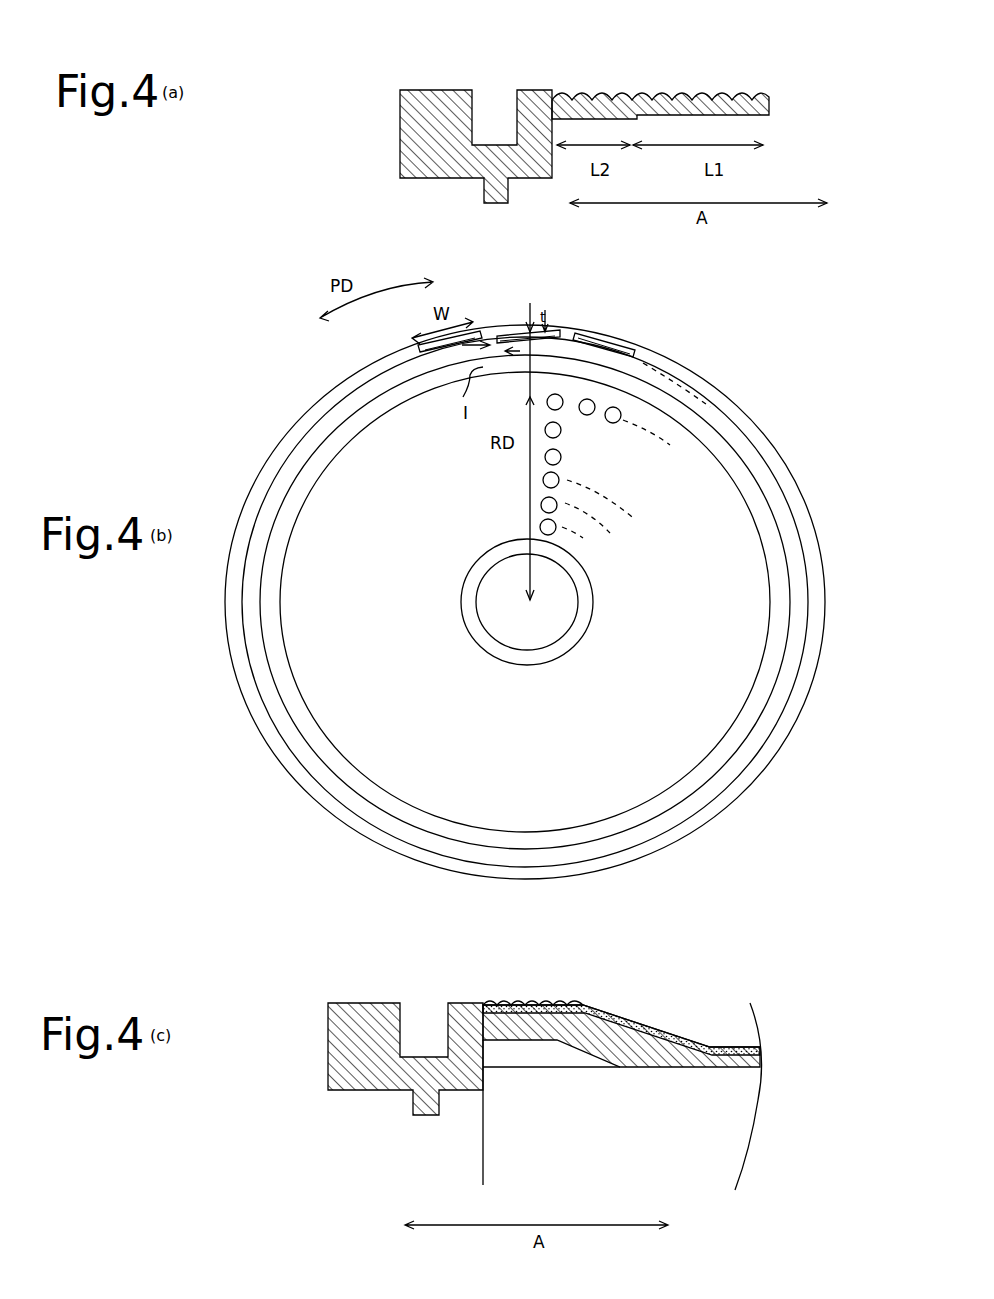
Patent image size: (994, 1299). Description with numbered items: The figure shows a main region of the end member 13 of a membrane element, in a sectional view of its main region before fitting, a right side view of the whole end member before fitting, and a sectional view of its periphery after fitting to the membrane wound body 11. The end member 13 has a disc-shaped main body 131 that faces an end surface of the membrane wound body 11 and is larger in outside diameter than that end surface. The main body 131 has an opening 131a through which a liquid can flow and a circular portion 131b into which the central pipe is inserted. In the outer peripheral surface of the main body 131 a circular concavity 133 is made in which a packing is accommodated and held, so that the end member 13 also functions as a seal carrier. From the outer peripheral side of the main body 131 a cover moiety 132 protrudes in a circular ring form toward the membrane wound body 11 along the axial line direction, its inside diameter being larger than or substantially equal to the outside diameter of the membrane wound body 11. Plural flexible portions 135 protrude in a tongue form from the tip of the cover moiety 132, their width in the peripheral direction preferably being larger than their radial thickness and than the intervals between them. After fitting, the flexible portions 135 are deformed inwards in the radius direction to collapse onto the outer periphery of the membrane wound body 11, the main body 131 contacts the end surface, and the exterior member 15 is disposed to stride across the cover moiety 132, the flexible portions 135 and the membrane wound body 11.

In FIG. 4A, the end member 13 is at (362, 100).
In FIG. 4C, the end member 13 is at (293, 1025).
In FIG. 4A, the main body 131 is at (400, 143).
In FIG. 4B, the main body 131 is at (272, 450).
In FIG. 4C, the main body 131 is at (328, 1060).
In FIG. 4B, the opening 131a is at (560, 457).
In FIG. 4B, the circular portion 131b is at (462, 623).
In FIG. 4A, the cover moiety 132 is at (598, 95).
In FIG. 4B, the cover moiety 132 is at (730, 410).
In FIG. 4C, the cover moiety 132 is at (527, 1003).
In FIG. 4A, the circular concavity 133 is at (495, 140).
In FIG. 4C, the circular concavity 133 is at (428, 1055).
In FIG. 4A, the flexible portions 135 is at (705, 97).
In FIG. 4B, the flexible portions 135 is at (558, 327).
In FIG. 4C, the flexible portions 135 is at (633, 1030).
In FIG. 4C, the exterior member 15 is at (593, 1008).
In FIG. 4C, the membrane wound body 11 is at (483, 1130).